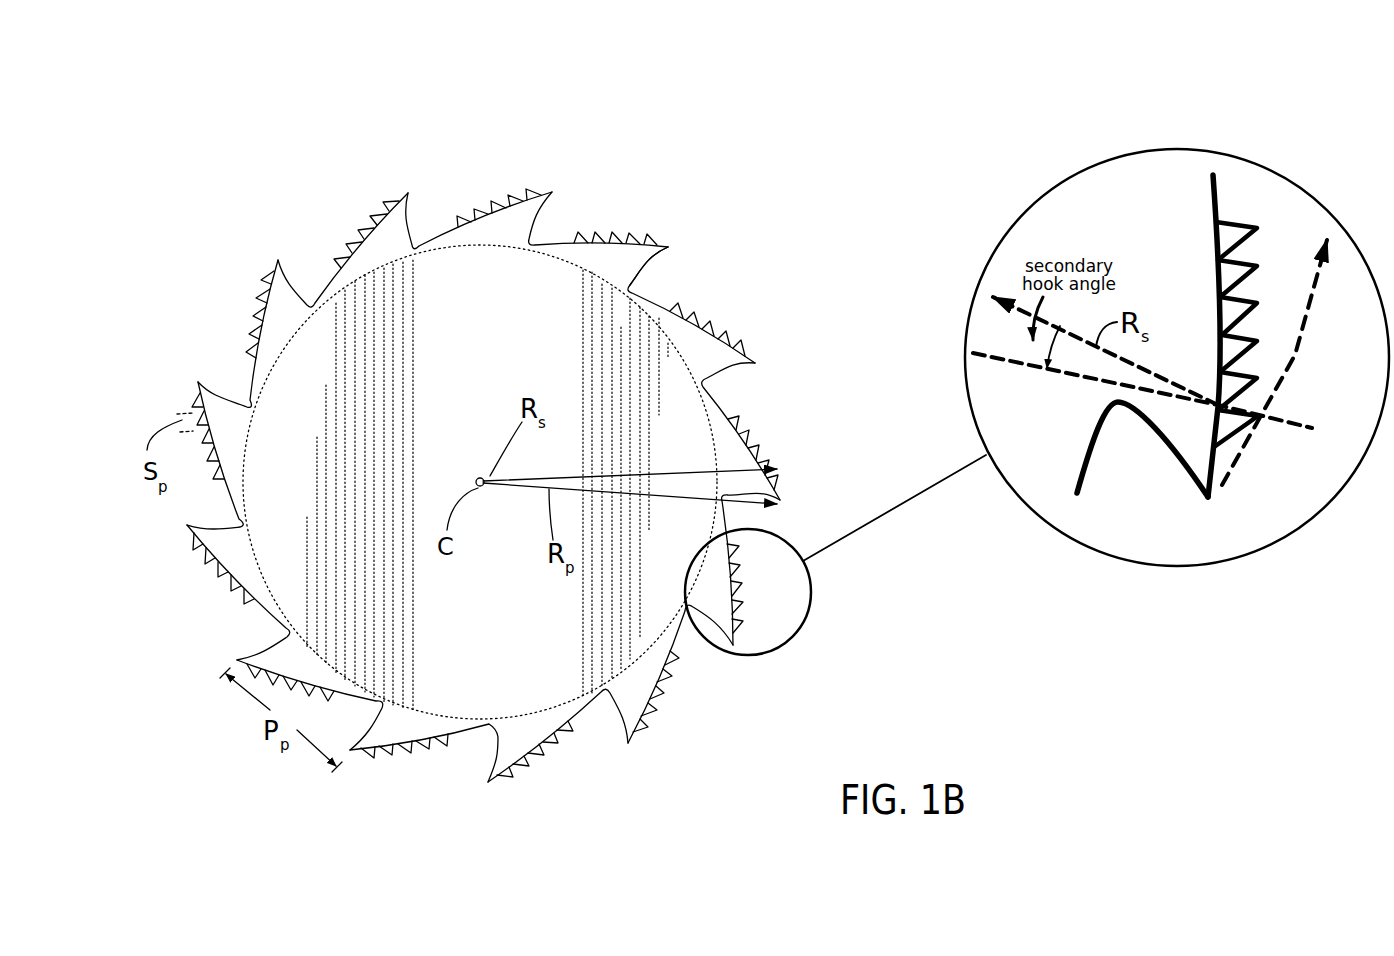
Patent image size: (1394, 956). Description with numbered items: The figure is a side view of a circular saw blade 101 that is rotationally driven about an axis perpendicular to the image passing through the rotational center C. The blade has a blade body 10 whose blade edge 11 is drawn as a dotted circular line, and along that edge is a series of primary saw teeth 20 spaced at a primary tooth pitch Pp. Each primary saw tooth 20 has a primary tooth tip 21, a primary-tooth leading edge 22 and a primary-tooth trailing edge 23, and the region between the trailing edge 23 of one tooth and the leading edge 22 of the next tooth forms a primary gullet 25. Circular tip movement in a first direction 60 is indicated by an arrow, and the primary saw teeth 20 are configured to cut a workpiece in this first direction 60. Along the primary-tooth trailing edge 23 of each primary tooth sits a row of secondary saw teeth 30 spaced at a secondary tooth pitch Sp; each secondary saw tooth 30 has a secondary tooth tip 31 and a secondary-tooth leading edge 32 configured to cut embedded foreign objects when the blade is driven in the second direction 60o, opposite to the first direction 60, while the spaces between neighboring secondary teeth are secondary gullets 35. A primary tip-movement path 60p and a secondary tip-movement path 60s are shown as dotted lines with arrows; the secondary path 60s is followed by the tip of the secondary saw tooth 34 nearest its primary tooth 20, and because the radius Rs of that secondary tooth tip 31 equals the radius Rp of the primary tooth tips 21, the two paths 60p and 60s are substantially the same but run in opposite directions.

The circular saw blade 101 is at (694, 116).
The blade body 10 is at (483, 695).
The blade edge 11 is at (248, 445).
The primary saw tooth 20 is at (645, 687).
The primary tooth tip 21 is at (673, 252).
The primary-tooth leading edge 22 is at (655, 260).
The primary-tooth trailing edge 23 is at (663, 243).
The primary gullet 25 is at (413, 243).
The secondary saw tooth 30 is at (370, 213).
The secondary tooth tip 31 is at (268, 280).
The secondary-tooth leading edge 32 is at (263, 290).
The secondary saw tooth nearest primary saw tooth 34 is at (518, 776).
The secondary gullet 35 is at (500, 195).
The first direction 60 is at (651, 182).
The second direction 60o is at (323, 210).
The primary tip-movement path 60p is at (196, 571).
The secondary tip-movement path 60s is at (624, 745).